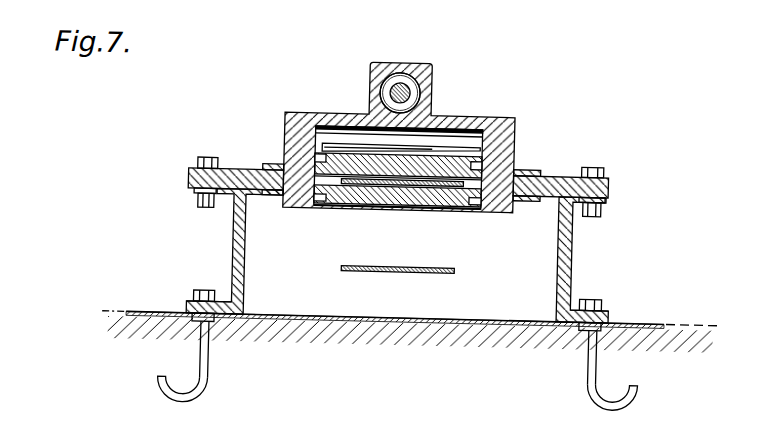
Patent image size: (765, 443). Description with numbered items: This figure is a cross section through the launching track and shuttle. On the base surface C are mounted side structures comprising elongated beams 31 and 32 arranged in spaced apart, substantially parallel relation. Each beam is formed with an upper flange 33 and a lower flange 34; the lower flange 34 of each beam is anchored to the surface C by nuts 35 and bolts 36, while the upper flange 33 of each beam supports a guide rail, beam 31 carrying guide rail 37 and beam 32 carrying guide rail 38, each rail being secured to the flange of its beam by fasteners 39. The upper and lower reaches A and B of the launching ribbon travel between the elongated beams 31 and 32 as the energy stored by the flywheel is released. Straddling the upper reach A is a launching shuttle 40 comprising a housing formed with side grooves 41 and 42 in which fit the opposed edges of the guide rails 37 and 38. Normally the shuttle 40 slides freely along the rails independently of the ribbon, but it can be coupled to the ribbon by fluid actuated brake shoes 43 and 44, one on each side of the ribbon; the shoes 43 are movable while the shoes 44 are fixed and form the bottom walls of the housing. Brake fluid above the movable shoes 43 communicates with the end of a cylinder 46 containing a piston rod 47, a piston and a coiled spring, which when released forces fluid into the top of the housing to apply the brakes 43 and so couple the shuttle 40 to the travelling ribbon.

The elongated beam 31 is at (245, 247).
The elongated beam 32 is at (572, 246).
The upper flange 33 is at (225, 300).
The lower flange 34 is at (218, 208).
The nut 35 is at (199, 299).
The bolt 36 is at (211, 357).
The guide rail 37 is at (188, 183).
The guide rail 38 is at (607, 183).
The fastener 39 is at (204, 167).
The launching shuttle 40 is at (487, 114).
The side groove 41 is at (266, 169).
The side groove 42 is at (522, 167).
The movable brake shoe 43 is at (338, 149).
The fixed brake shoe 44 is at (351, 211).
The cylinder 46 is at (418, 95).
The piston rod 47 is at (404, 86).
The upper reach of launching ribbon A is at (409, 206).
The lower reach of launching ribbon B is at (441, 271).
The base surface C is at (141, 316).